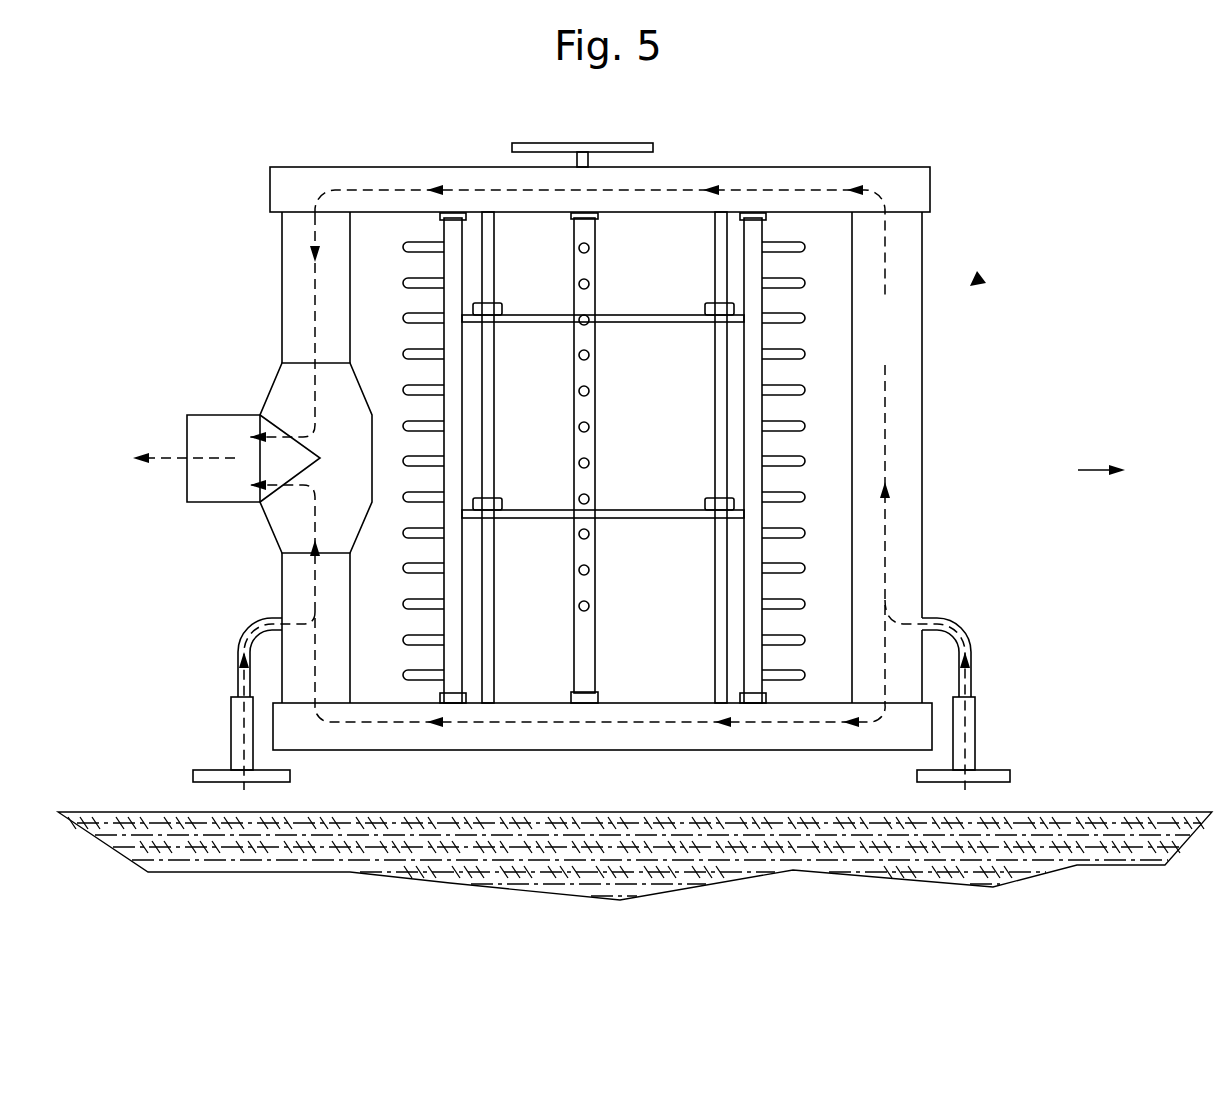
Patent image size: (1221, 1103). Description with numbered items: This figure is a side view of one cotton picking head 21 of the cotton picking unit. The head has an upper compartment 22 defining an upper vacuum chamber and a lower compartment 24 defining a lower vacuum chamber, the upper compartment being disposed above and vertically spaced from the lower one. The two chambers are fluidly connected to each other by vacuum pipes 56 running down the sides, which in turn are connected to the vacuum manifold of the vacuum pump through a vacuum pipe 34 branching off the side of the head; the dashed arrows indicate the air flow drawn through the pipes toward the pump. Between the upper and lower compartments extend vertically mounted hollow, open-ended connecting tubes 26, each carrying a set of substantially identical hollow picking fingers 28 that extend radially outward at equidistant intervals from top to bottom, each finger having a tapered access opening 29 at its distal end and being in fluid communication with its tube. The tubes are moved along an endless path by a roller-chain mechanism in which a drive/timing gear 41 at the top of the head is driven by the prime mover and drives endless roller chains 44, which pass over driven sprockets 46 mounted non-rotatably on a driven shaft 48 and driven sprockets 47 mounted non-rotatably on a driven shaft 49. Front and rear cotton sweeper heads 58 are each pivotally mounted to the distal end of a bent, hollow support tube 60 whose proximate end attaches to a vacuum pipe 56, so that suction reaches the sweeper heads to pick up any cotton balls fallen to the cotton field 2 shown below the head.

The cotton field 2 is at (1100, 810).
The cotton picking head 21 is at (629, 447).
The upper compartment 22 is at (930, 190).
The lower compartment 24 is at (775, 750).
The connecting tubes 26 is at (597, 262).
The picking fingers 28 is at (412, 601).
The access opening 29 is at (405, 320).
The vacuum pipes 34 is at (227, 415).
The drive/timing gear 41 is at (549, 143).
The endless roller chain 44 is at (625, 322).
The driven sprockets 46 is at (712, 322).
The driven sprockets 47 is at (500, 322).
The driven shaft 48 is at (715, 662).
The driven shaft 49 is at (494, 434).
The vacuum pipes 56 is at (282, 276).
The cotton sweeper heads 58 is at (212, 768).
The support tube 60 is at (236, 655).